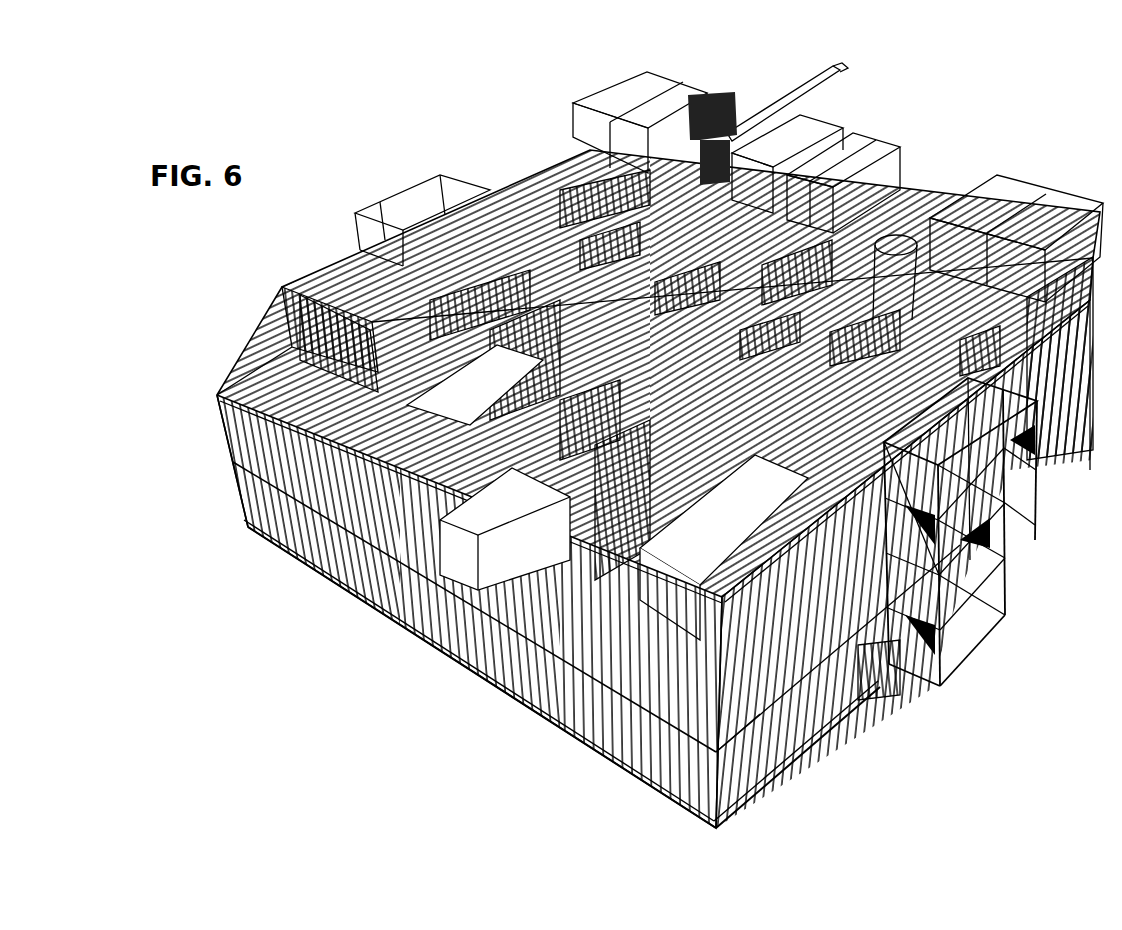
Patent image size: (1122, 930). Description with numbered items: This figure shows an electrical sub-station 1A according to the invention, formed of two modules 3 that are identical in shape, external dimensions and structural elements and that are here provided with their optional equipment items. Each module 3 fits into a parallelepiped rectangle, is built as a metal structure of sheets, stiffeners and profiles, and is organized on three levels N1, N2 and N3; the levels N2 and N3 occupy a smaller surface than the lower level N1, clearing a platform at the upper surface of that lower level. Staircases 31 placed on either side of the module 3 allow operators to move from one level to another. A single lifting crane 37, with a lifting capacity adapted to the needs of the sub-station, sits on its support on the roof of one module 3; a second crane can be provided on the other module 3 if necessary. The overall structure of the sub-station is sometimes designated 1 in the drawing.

The modular building 1 is at (525, 735).
The electrical sub-station 1A is at (963, 68).
The module 3 is at (312, 605).
The staircase 31 is at (378, 185).
The lifting crane 37 is at (762, 78).
The level N1 is at (220, 509).
The level N2 is at (200, 447).
The level N3 is at (265, 332).